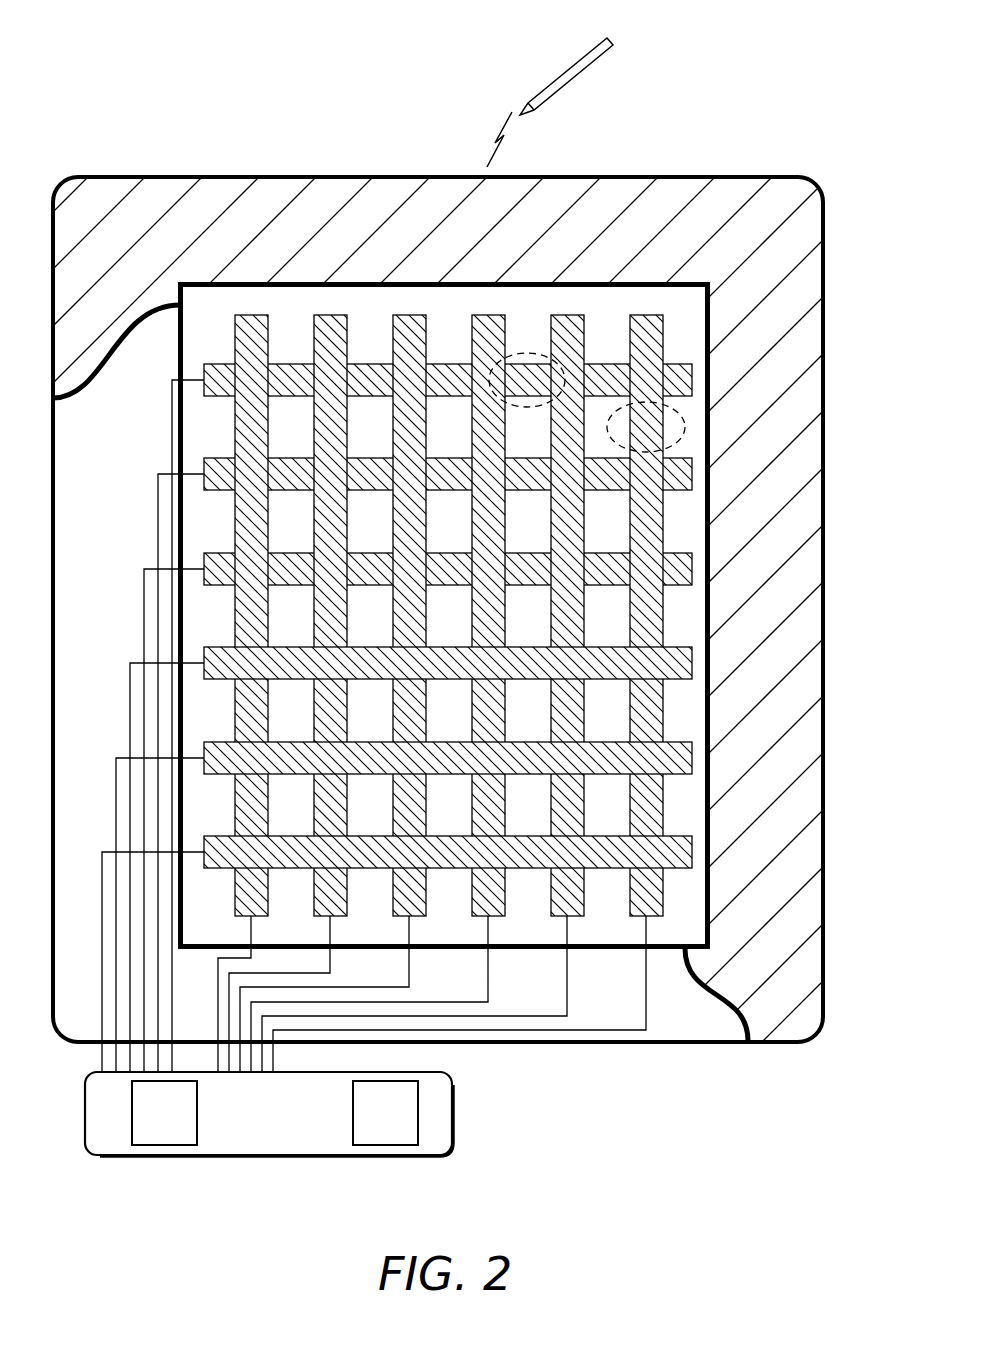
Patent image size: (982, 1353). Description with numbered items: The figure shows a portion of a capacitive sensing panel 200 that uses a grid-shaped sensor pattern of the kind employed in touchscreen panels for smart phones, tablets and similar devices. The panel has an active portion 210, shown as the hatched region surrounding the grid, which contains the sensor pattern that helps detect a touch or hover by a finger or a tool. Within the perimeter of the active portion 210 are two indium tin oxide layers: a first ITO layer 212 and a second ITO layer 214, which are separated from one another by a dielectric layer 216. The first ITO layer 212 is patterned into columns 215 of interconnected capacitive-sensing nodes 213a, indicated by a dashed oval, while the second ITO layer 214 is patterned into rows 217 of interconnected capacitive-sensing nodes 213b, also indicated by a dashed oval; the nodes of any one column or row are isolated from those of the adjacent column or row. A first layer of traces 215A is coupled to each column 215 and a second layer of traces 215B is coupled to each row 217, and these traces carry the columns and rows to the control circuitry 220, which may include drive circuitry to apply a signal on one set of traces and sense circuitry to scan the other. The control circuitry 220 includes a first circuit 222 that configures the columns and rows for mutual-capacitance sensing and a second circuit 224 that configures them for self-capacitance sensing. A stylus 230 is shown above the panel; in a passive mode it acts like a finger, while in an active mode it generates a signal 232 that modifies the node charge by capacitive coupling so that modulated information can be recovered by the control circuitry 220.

The capacitive sensing panel 200 is at (160, 122).
The active portion 210 is at (709, 588).
The first ITO layer 212 is at (325, 302).
The capacitive-sensing nodes 213a is at (684, 425).
The capacitive-sensing nodes 213b is at (552, 357).
The second ITO layer 214 is at (205, 357).
The columns 215 is at (486, 298).
The first layer of traces 215A is at (540, 1030).
The second layer of traces 215B is at (128, 705).
The dielectric layer 216 is at (212, 317).
The rows 217 is at (128, 473).
The control circuitry 220 is at (248, 1126).
The first circuit 222 is at (146, 1126).
The second circuit 224 is at (366, 1126).
The stylus 230 is at (562, 70).
The signal 232 is at (497, 132).